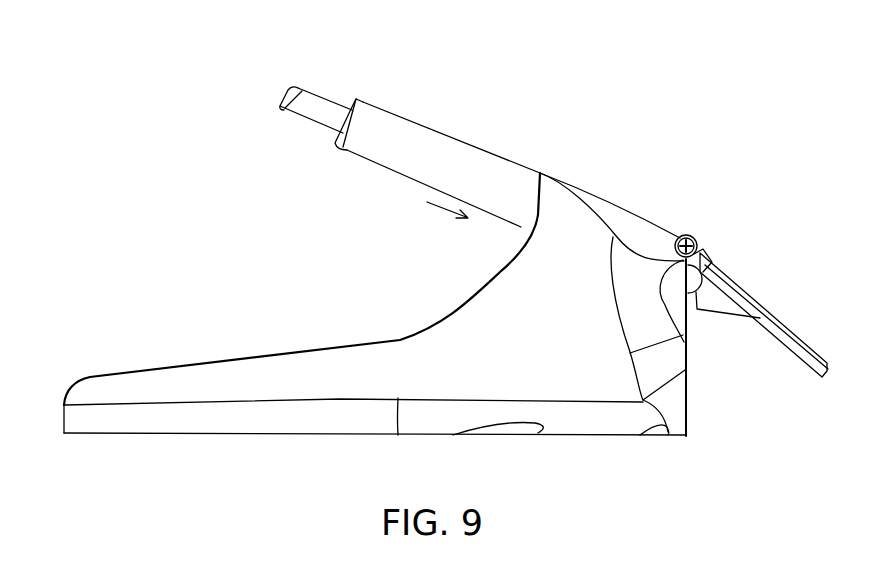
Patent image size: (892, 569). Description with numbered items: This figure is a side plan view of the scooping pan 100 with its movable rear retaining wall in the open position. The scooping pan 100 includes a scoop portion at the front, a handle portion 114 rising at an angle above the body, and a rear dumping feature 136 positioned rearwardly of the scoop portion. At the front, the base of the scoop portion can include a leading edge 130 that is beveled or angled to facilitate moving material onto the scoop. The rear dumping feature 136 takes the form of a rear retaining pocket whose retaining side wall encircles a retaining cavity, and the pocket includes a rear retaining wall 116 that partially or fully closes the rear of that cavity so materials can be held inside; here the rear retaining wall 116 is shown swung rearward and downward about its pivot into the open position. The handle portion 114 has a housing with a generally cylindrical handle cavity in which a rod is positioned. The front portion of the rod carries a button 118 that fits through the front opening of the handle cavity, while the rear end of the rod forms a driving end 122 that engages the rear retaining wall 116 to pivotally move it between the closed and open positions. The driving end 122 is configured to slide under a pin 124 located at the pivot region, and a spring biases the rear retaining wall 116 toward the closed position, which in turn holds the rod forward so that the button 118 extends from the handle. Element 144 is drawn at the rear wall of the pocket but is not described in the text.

The scooping pan 100 is at (150, 125).
The handle portion 114 is at (440, 130).
The rear retaining wall 116 is at (765, 300).
The button 118 is at (318, 95).
The driving end 122 is at (712, 260).
The pin 124 is at (690, 235).
The leading edge 130 is at (64, 434).
The rear dumping feature 136 is at (682, 438).
The rear wall 144 is at (687, 400).